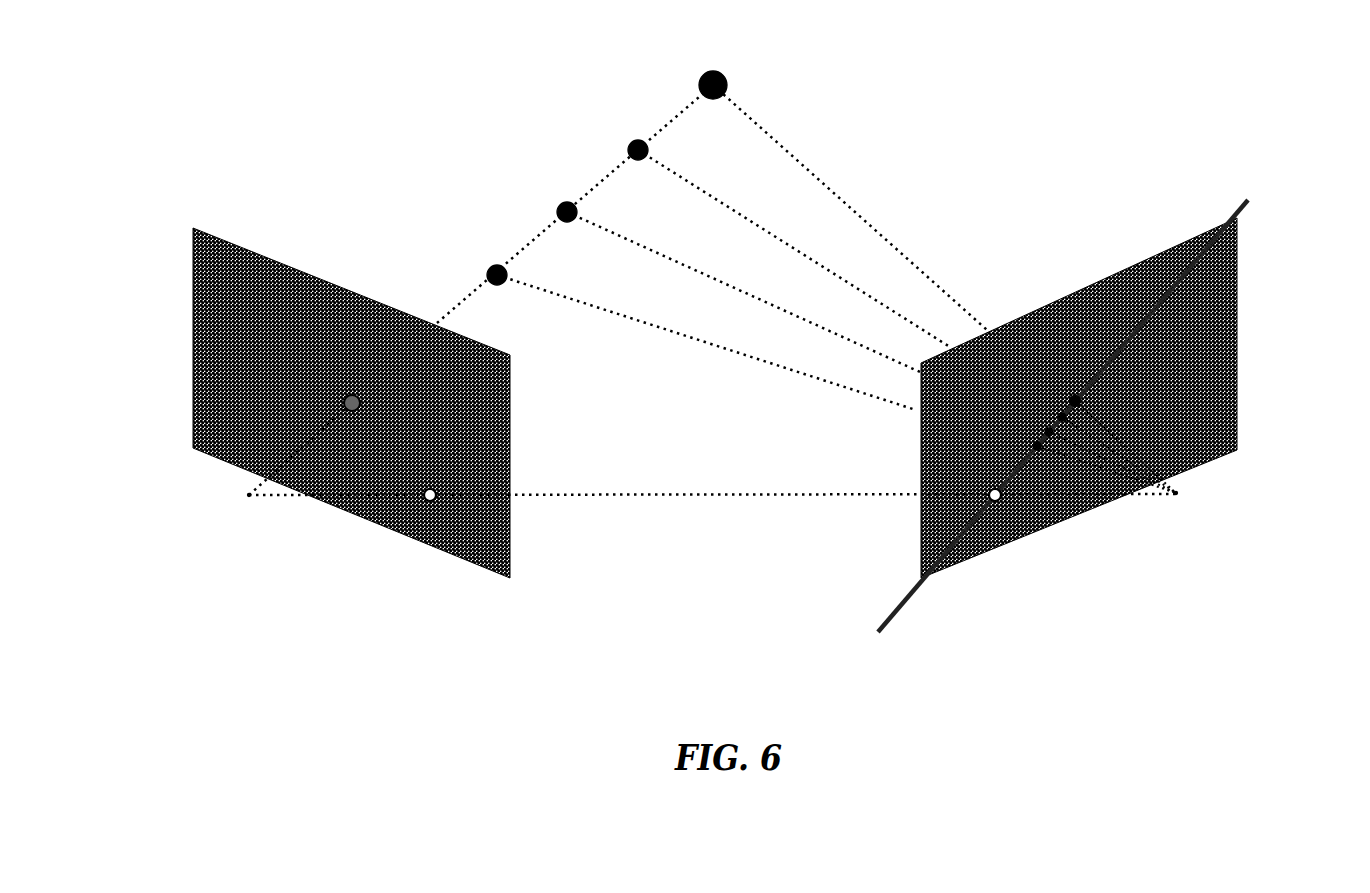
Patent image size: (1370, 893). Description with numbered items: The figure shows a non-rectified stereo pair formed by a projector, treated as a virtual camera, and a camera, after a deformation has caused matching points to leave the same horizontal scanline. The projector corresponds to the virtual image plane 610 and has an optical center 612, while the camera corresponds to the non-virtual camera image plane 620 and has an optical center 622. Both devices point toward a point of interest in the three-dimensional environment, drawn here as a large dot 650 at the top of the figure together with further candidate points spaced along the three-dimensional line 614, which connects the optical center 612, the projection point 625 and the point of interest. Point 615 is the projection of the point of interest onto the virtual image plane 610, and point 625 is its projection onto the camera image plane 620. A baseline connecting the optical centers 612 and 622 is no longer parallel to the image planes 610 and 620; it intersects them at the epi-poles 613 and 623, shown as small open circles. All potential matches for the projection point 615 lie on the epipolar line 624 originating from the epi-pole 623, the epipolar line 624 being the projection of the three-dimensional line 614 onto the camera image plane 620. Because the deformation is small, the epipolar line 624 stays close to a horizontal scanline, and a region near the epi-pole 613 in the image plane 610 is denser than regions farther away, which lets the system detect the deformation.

The virtual image plane 610 is at (197, 272).
The optical center 612 is at (247, 495).
The epi-pole 613 is at (423, 499).
The 3D line 614 is at (485, 287).
The projection point 615 is at (343, 404).
The non-virtual camera image plane 620 is at (1227, 282).
The optical center 622 is at (1182, 493).
The epi-pole 623 is at (988, 500).
The epipolar line 624 is at (1248, 202).
The projection point 625 is at (1085, 401).
The 3D object point 650 is at (712, 73).